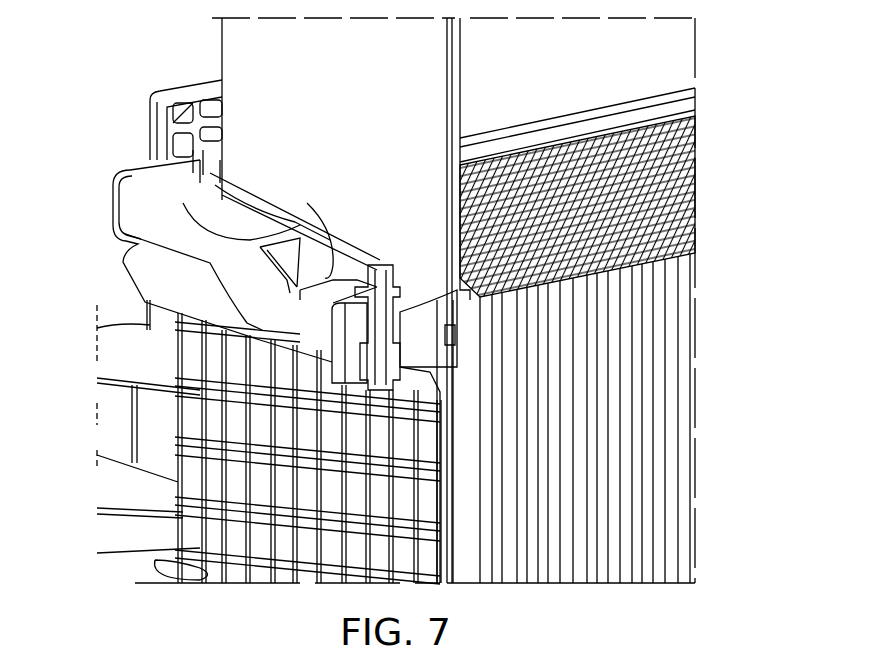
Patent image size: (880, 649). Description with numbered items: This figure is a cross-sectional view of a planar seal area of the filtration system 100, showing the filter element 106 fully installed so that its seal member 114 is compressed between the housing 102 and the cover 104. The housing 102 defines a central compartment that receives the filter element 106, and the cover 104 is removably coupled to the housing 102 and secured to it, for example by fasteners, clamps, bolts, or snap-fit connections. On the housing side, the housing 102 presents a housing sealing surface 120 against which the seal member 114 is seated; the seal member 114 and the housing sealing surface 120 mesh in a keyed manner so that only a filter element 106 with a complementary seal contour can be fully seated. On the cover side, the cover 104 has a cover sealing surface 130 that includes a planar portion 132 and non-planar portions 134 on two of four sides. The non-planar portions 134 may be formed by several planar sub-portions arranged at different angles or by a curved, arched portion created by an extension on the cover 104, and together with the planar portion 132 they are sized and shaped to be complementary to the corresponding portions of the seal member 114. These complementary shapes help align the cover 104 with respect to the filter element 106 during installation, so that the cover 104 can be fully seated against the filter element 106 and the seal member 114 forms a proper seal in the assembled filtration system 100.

The filtration system 100 is at (95, 60).
The housing 102 is at (207, 548).
The cover 104 is at (258, 60).
The filter element 106 is at (648, 350).
The seal member 114 is at (434, 336).
The housing sealing surface 120 is at (415, 368).
The cover sealing surface 130 is at (148, 200).
The planar portion 132 is at (166, 160).
The non-planar portions 134 is at (228, 290).